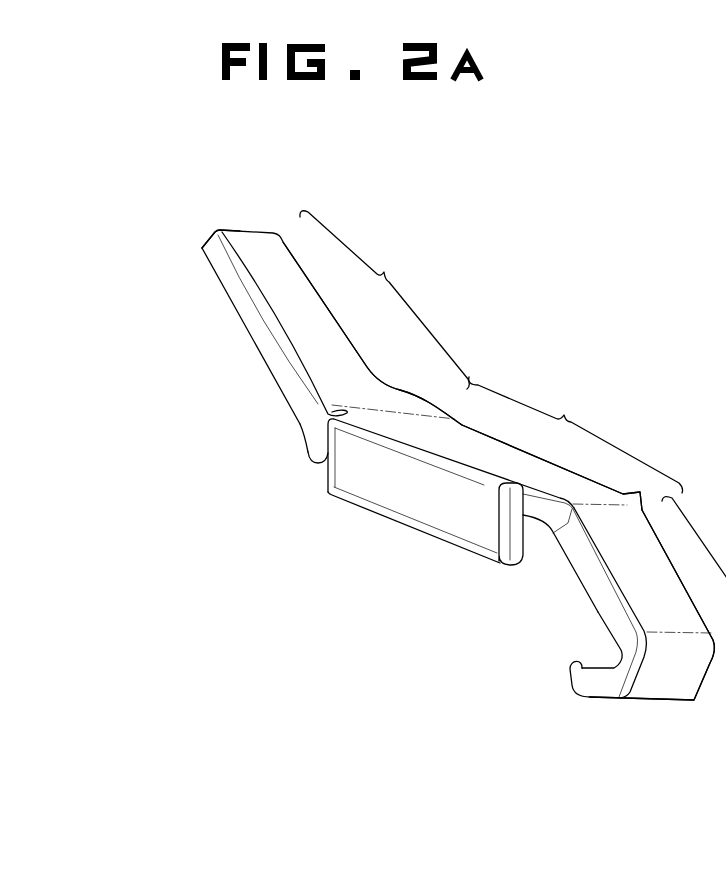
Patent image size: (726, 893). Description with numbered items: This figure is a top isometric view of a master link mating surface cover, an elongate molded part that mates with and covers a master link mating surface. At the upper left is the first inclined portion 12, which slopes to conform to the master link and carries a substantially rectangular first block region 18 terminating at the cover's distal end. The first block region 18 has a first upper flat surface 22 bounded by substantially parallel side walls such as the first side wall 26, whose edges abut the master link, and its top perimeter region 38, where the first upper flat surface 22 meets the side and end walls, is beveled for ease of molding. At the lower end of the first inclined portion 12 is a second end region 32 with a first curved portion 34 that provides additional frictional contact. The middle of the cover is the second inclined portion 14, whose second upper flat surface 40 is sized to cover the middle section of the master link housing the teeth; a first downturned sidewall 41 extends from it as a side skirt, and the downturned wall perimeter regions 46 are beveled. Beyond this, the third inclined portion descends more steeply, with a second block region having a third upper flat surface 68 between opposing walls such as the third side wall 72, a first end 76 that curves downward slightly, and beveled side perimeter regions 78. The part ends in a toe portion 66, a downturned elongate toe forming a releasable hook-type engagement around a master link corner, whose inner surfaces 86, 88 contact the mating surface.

The first inclined portion 12 is at (384, 300).
The second inclined portion 14 is at (576, 435).
The first block region 18 is at (235, 204).
The first upper flat surface 22 is at (280, 247).
The first side wall 26 is at (224, 276).
The second end region 32 is at (282, 430).
The first curved portion 34 is at (310, 456).
The top perimeter region 38 is at (217, 230).
The second upper flat surface 40 is at (463, 428).
The first downturned sidewall 41 is at (368, 478).
The downturned wall perimeter region 46 is at (395, 522).
The toe portion 66 is at (667, 718).
The third upper flat surface 68 is at (656, 547).
The third side wall 72 is at (588, 573).
The first end of second block region 76 is at (528, 549).
The side perimeter region 78 is at (620, 602).
The inner surface of toe portion 86 is at (570, 664).
The inner surface of toe portion 88 is at (618, 632).